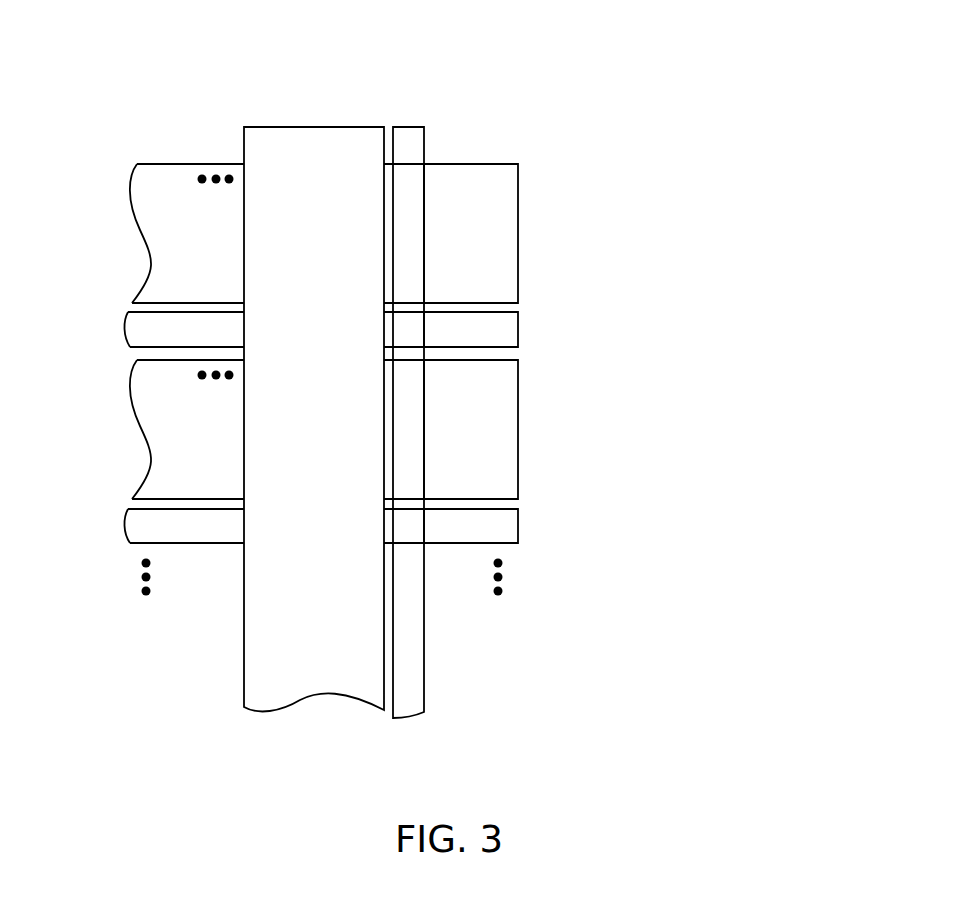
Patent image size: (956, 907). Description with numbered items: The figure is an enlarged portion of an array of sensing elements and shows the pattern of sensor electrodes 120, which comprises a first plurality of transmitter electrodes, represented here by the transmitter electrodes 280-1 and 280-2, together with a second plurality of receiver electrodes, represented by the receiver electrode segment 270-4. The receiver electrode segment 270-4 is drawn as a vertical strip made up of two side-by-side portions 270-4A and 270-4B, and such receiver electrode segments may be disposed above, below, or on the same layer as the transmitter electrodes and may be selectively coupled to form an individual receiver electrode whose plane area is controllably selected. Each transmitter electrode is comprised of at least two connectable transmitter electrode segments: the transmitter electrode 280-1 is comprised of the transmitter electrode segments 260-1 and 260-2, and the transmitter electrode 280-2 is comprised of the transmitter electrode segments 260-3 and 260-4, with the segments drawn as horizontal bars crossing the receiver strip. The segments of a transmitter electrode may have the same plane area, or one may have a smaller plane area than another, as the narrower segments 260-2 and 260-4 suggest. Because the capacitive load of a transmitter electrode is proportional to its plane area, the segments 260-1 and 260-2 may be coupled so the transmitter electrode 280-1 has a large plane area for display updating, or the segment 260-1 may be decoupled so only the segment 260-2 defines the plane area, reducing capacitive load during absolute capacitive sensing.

The pattern of sensor electrodes 120 is at (456, 359).
The receiver electrode segment 270-4 is at (334, 359).
The word line first portion 270-4A is at (357, 127).
The word line second portion 270-4B is at (425, 93).
The transmitter electrode segment 260-1 is at (507, 198).
The transmitter electrode segment 260-2 is at (523, 329).
The transmitter electrode segment 260-3 is at (507, 393).
The transmitter electrode segment 260-4 is at (524, 526).
The transmitter electrode 280-1 is at (586, 255).
The transmitter electrode 280-2 is at (586, 449).